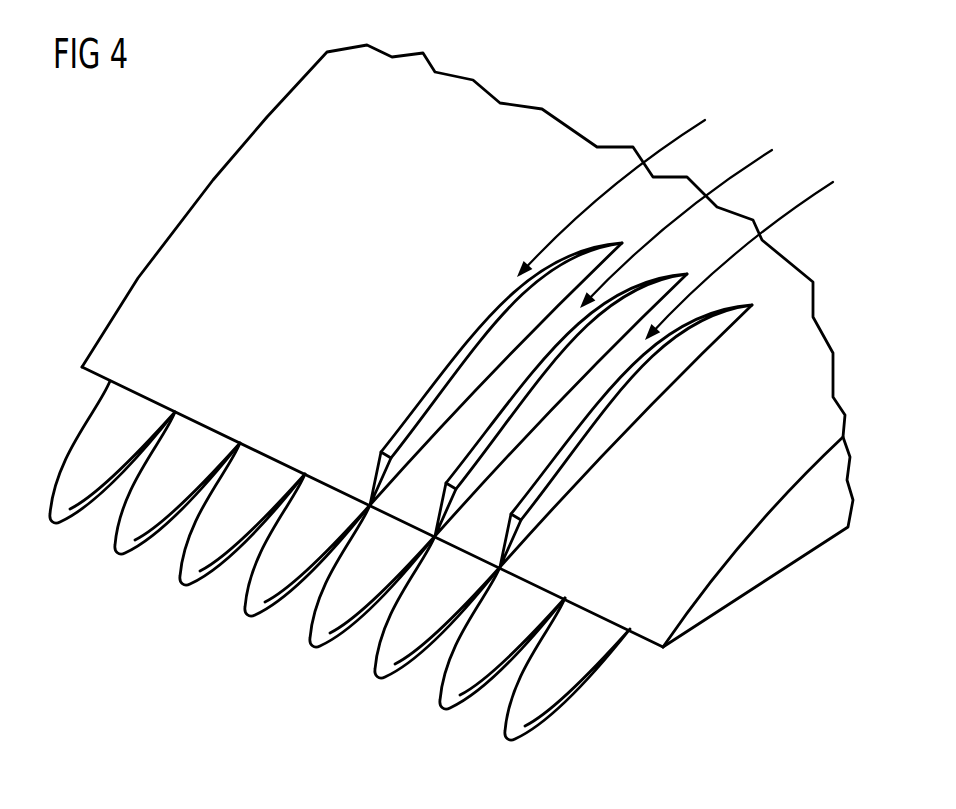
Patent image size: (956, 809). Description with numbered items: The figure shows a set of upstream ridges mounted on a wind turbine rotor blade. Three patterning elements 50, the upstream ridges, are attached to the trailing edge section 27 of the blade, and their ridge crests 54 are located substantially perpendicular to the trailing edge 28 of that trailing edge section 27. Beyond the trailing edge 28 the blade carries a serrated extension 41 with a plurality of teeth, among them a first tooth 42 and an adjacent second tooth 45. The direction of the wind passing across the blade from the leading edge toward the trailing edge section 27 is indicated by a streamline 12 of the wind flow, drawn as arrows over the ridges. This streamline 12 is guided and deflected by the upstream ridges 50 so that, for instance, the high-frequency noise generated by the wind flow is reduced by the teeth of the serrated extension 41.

The streamline of the wind flow 12 is at (698, 122).
The trailing edge section 27 is at (163, 260).
The trailing edge 28 is at (90, 374).
The serrated extension 41 is at (158, 572).
The first tooth 42 is at (329, 633).
The second tooth 45 is at (397, 658).
The patterning elements 50 is at (437, 417).
The ridge crests 54 is at (507, 420).